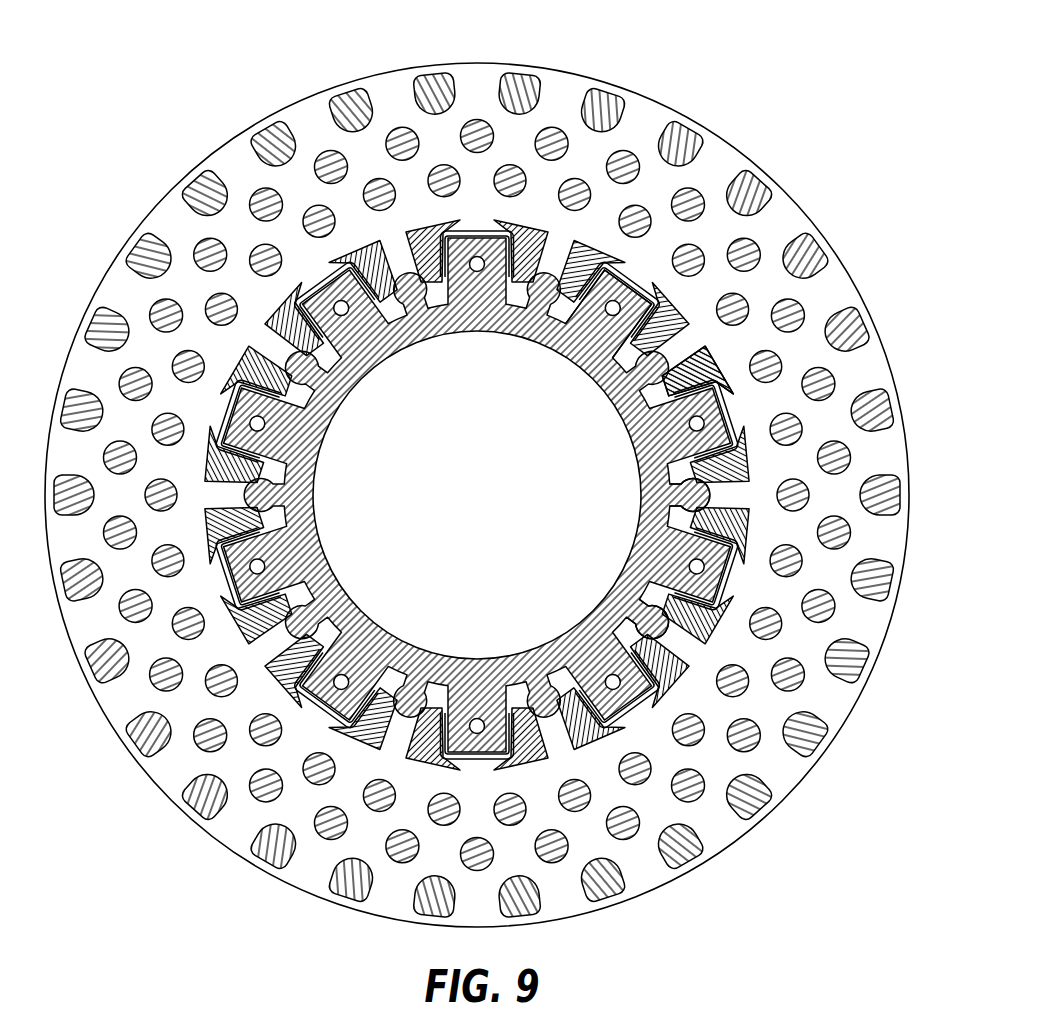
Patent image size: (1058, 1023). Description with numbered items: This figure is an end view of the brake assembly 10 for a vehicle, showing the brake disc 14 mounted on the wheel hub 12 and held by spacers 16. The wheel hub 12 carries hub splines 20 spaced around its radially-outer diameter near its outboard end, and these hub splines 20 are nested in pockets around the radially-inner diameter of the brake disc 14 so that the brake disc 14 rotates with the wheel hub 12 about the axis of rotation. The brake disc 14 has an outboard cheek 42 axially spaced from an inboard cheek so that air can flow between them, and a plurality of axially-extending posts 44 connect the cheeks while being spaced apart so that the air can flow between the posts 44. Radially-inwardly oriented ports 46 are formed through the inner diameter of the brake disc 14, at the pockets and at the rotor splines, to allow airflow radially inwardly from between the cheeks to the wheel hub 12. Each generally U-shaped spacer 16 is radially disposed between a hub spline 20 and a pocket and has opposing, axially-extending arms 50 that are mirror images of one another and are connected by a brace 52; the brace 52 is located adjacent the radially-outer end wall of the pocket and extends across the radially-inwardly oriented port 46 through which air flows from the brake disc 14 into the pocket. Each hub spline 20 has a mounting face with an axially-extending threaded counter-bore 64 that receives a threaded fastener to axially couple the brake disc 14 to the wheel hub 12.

The brake assembly 10 is at (504, 463).
The wheel hub 12 is at (514, 376).
The brake disc 14 is at (504, 495).
The spacer 16 is at (636, 266).
The hub spline 20 is at (250, 420).
The outboard cheek 42 is at (537, 445).
The axially-extending post 44 is at (843, 455).
The radially-inwardly oriented port 46 is at (692, 322).
The arm 50 is at (700, 513).
The brace 52 is at (723, 577).
The threaded counter-bore 64 is at (476, 257).